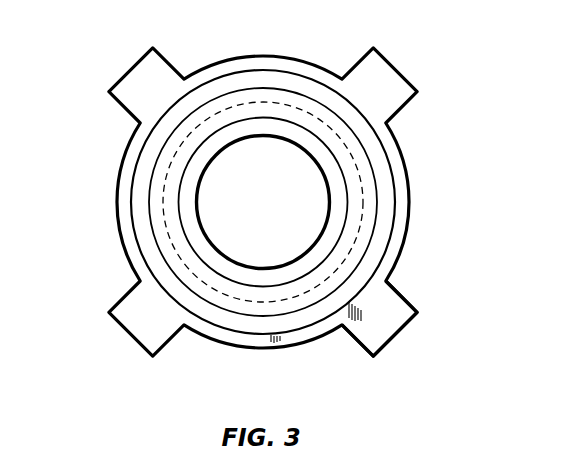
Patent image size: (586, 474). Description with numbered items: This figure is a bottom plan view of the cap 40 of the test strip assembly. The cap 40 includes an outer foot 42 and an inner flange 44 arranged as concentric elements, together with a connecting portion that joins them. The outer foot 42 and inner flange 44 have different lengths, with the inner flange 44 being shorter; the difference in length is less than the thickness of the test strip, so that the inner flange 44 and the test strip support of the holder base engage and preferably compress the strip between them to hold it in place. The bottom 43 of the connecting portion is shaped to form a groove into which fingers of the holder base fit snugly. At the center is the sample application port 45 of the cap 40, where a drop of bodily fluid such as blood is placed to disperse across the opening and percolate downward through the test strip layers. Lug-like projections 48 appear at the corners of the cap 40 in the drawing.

The cap 40 is at (112, 228).
The outer foot 42 is at (288, 83).
The bottom of connecting portion 43 is at (202, 269).
The inner flange 44 is at (274, 130).
The sample application port 45 is at (318, 210).
The lug / ear tab 48 is at (380, 332).